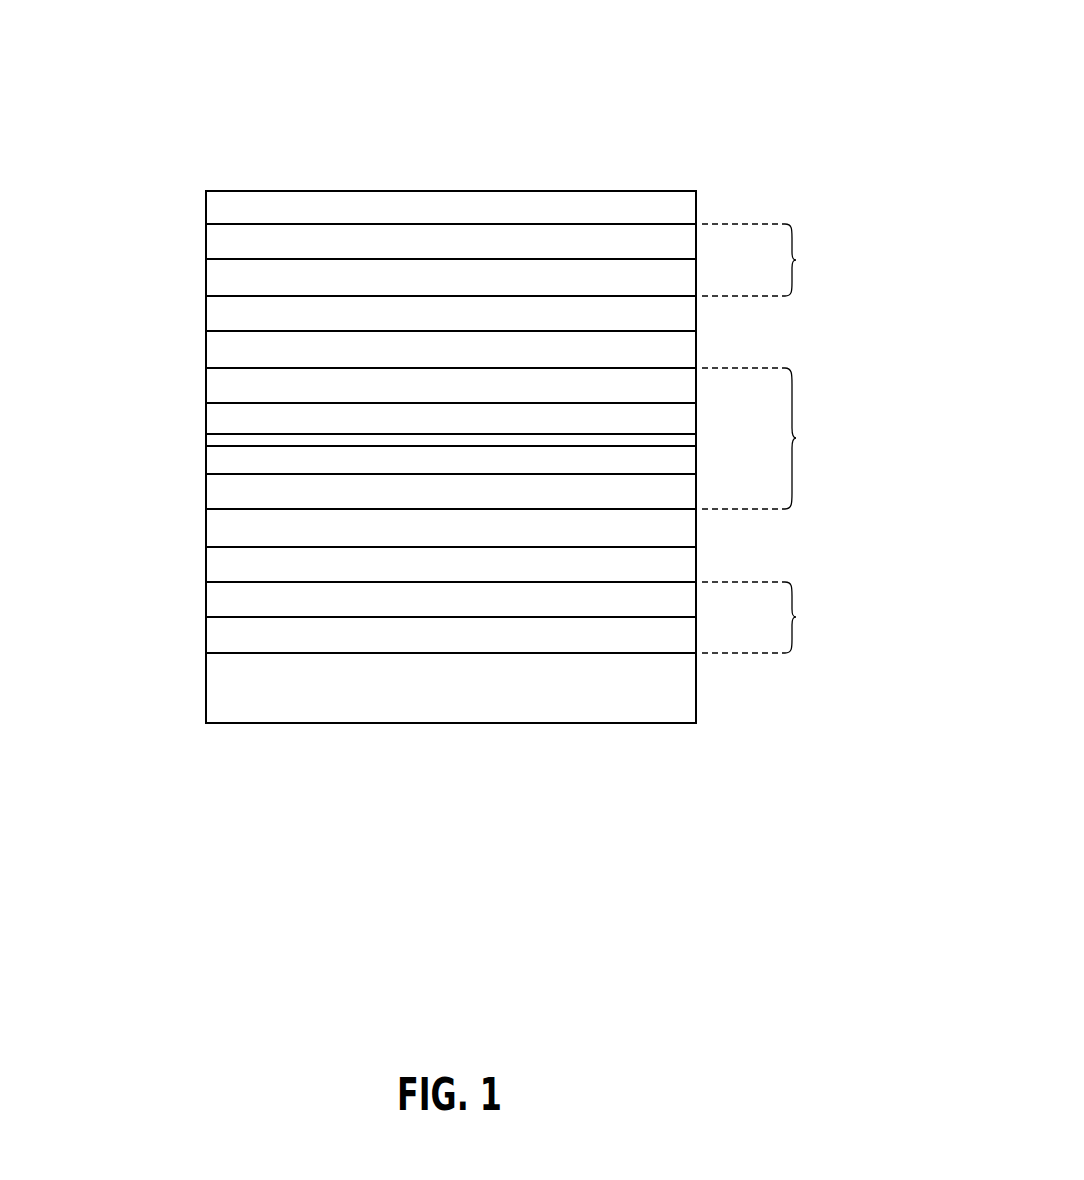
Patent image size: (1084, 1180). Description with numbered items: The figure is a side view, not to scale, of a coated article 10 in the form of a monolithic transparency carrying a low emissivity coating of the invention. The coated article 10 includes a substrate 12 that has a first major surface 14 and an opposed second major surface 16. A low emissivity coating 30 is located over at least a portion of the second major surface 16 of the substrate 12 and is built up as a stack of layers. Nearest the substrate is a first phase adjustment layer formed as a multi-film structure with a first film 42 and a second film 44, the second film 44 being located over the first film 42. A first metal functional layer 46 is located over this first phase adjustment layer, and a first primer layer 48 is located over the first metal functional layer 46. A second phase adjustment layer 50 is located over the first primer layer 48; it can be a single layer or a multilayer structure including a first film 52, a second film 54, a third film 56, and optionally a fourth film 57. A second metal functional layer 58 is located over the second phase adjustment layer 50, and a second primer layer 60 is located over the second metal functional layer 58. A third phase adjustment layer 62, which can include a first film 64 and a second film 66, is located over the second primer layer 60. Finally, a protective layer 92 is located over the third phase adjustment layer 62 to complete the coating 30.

The coated article 10 is at (721, 130).
The substrate 12 is at (222, 697).
The first major surface 14 is at (228, 730).
The second major surface 16 is at (231, 646).
The low emissivity coating 30 is at (142, 202).
The first film 42 is at (687, 637).
The second film 44 is at (687, 600).
The first metal functional layer 46 is at (680, 569).
The first primer layer 48 is at (222, 530).
The second phase adjustment layer 50 is at (519, 438).
The first film 52 is at (682, 492).
The second film 54 is at (682, 462).
The third film 56 is at (682, 425).
The fourth film 57 is at (207, 441).
The second metal functional layer 58 is at (685, 350).
The second primer layer 60 is at (222, 313).
The third phase adjustment layer 62 is at (519, 438).
The first film 64 is at (682, 278).
The second film 66 is at (686, 243).
The protective layer 92 is at (686, 207).